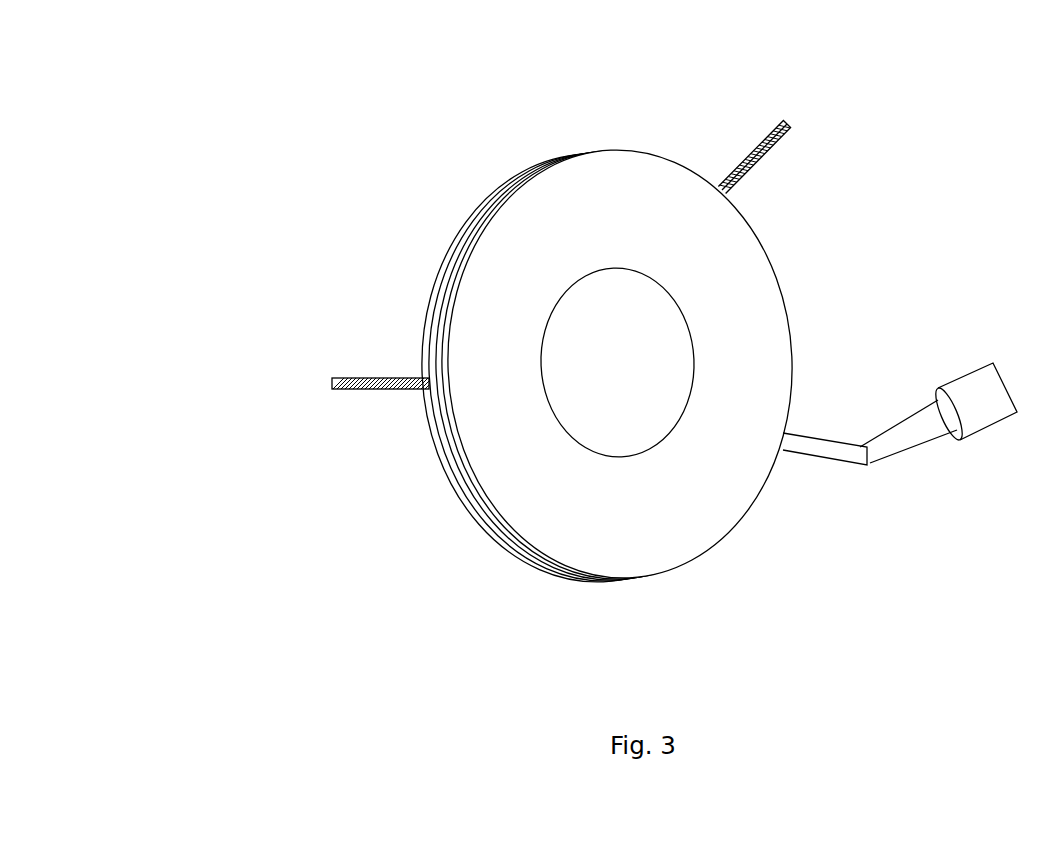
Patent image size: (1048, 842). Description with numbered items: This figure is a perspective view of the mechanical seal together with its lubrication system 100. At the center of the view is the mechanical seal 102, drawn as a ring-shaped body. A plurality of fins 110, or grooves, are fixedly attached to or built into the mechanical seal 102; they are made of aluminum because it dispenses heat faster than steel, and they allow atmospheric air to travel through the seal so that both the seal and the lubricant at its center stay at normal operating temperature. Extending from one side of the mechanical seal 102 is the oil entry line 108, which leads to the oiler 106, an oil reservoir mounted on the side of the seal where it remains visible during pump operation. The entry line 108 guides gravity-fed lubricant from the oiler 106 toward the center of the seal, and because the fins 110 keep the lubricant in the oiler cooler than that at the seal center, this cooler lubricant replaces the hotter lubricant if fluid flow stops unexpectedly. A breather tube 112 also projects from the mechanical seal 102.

The system 100 is at (300, 123).
The mechanical seal 102 is at (643, 525).
The oiler 106 is at (988, 428).
The oil entry line 108 is at (903, 418).
The plurality of fins 110 is at (434, 457).
The breather tube 112 is at (382, 377).